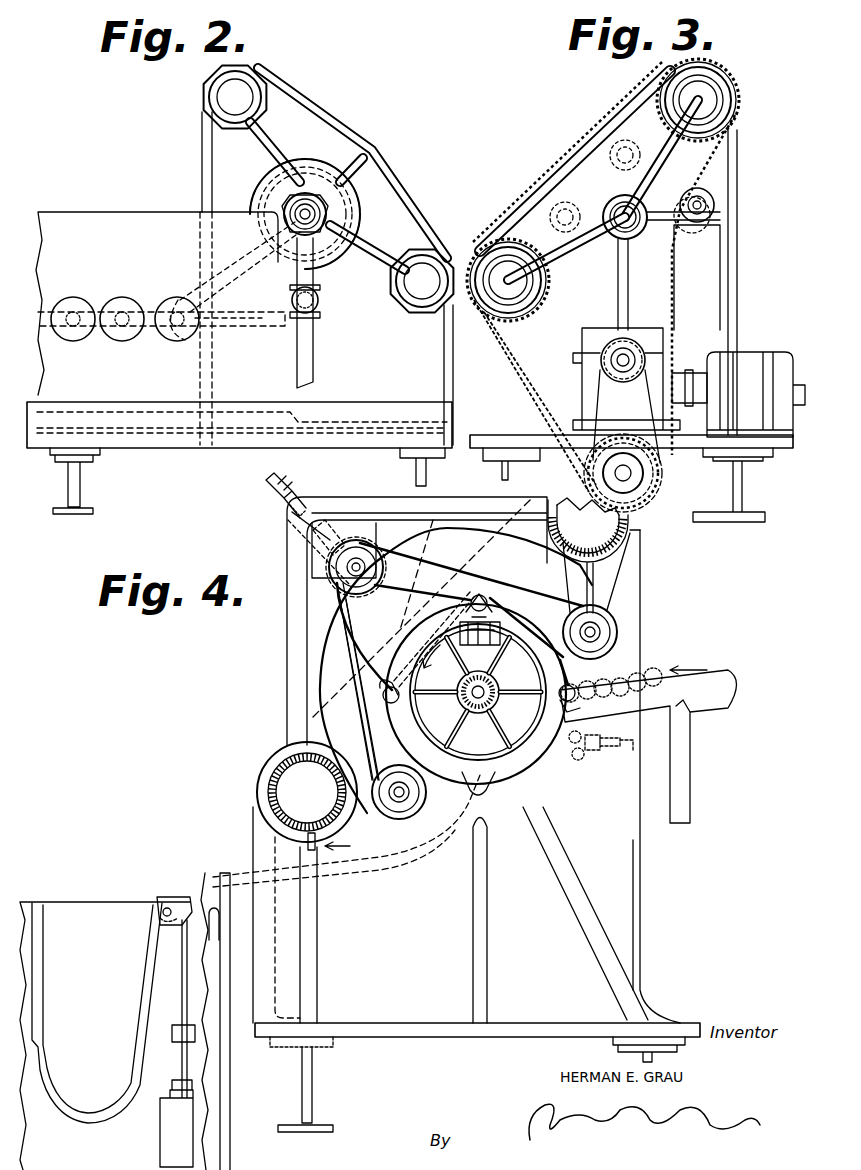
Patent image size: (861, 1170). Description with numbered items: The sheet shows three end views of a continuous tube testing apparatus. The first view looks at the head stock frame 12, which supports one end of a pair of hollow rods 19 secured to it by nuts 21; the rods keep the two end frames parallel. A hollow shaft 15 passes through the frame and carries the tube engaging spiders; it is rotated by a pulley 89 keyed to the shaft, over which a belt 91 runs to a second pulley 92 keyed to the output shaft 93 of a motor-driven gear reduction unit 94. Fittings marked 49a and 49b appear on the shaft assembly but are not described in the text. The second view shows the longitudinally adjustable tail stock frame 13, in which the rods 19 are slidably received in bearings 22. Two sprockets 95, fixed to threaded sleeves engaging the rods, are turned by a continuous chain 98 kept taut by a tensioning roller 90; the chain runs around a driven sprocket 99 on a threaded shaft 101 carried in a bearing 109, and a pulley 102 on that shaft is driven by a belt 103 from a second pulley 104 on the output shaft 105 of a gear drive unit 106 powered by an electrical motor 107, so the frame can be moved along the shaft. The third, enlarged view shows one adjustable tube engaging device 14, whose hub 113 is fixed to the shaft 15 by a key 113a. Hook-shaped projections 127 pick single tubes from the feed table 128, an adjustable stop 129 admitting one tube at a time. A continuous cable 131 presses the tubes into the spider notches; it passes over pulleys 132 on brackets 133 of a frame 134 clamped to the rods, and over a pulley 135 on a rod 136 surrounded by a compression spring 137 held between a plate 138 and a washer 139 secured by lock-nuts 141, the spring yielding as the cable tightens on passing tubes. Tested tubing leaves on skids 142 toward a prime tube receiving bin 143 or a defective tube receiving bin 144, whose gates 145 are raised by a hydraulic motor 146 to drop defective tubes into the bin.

In FIG. 2, the head stock frame 12 is at (205, 150).
In FIG. 3, the tail stock frame 13 is at (735, 262).
In FIG. 4, the adjustable tube engaging device 14 is at (520, 745).
In FIG. 2, the hollow shaft 15 is at (312, 190).
In FIG. 3, the hollow shaft 15 is at (638, 236).
In FIG. 4, the hollow shaft 15 is at (492, 700).
In FIG. 2, the hollow rod 19 is at (222, 95).
In FIG. 3, the hollow rod 19 is at (715, 100).
In FIG. 4, the hollow rod 19 is at (618, 527).
In FIG. 2, the nut 21 is at (218, 70).
In FIG. 3, the bearing 22 is at (715, 102).
In FIG. 2, the fitting 49a is at (318, 300).
In FIG. 2, the coupling 49b is at (280, 208).
In FIG. 2, the pulley 89 is at (280, 268).
In FIG. 3, the tensioning roller 90 is at (712, 200).
In FIG. 2, the belt 91 is at (195, 290).
In FIG. 2, the second pulley 92 is at (195, 300).
In FIG. 2, the output shaft 93 is at (175, 330).
In FIG. 2, the gear reduction unit 94 is at (120, 212).
In FIG. 3, the sprocket 95 is at (678, 118).
In FIG. 3, the continuous chain 98 is at (585, 140).
In FIG. 3, the driven sprocket 99 is at (586, 445).
In FIG. 3, the shaft 101 is at (640, 470).
In FIG. 3, the pulley 102 is at (662, 480).
In FIG. 3, the belt 103 is at (596, 395).
In FIG. 3, the second pulley 104 is at (600, 370).
In FIG. 3, the output shaft 105 is at (618, 345).
In FIG. 3, the gear drive unit 106 is at (650, 338).
In FIG. 3, the electrical motor 107 is at (750, 352).
In FIG. 3, the bearing 109 is at (658, 492).
In FIG. 4, the hub 113 is at (496, 688).
In FIG. 4, the key 113a is at (490, 675).
In FIG. 4, the hook-shaped projection 127 is at (378, 698).
In FIG. 4, the feed table 128 is at (712, 680).
In FIG. 4, the adjustable stop 129 is at (576, 765).
In FIG. 4, the continuous cable 131 is at (425, 565).
In FIG. 4, the pulley 132 is at (612, 625).
In FIG. 4, the bracket 133 is at (628, 580).
In FIG. 4, the frame 134 is at (290, 651).
In FIG. 4, the pulley 135 is at (370, 587).
In FIG. 4, the rod 136 is at (340, 520).
In FIG. 4, the compression spring 137 is at (288, 510).
In FIG. 4, the plate 138 is at (335, 520).
In FIG. 4, the washer 139 is at (280, 495).
In FIG. 4, the lock-nut 141 is at (270, 490).
In FIG. 4, the skid 142 is at (235, 873).
In FIG. 4, the prime tube receiving bin 143 is at (98, 900).
In FIG. 4, the defective tube receiving bin 144 is at (215, 930).
In FIG. 4, the gate 145 is at (190, 885).
In FIG. 4, the hydraulic motor 146 is at (160, 1136).